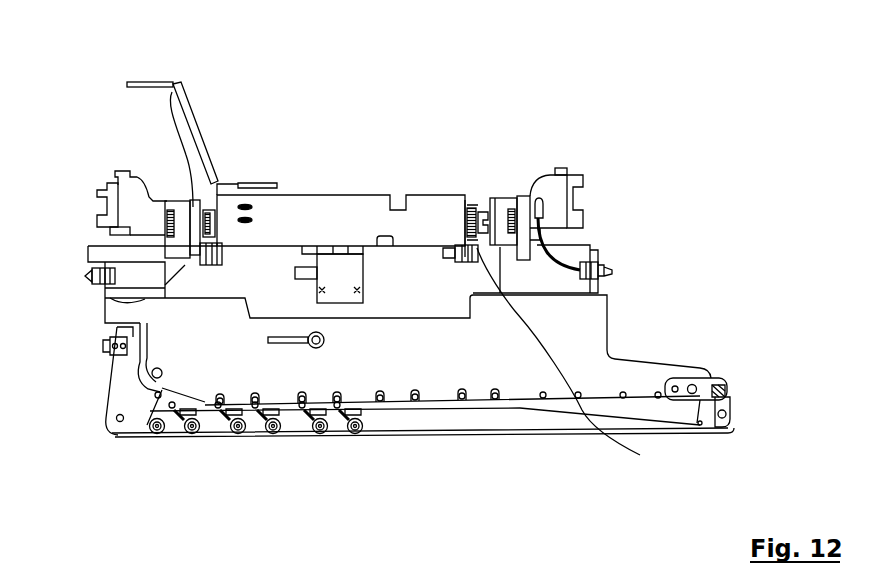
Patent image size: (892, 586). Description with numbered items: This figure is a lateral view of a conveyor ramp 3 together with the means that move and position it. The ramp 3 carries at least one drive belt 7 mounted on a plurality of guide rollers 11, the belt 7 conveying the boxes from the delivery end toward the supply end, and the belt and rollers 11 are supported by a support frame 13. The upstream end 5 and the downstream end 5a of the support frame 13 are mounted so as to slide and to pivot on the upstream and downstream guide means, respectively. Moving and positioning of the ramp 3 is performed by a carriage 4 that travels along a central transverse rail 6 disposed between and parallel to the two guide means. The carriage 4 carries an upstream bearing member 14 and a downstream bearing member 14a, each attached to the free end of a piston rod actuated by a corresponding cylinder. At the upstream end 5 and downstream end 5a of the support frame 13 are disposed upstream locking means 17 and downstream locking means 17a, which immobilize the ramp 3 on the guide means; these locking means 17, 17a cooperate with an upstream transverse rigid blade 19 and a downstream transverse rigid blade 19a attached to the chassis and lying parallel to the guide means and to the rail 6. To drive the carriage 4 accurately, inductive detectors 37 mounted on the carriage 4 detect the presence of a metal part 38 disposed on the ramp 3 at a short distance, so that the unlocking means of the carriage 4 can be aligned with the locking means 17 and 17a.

The ramp 3 is at (640, 358).
The carriage 4 is at (343, 195).
The upstream end 5 is at (587, 182).
The downstream end 5a is at (97, 188).
The central transverse rail 6 is at (380, 282).
The drive belt 7 is at (463, 433).
The guide rollers 11 is at (245, 433).
The support frame 13 is at (597, 248).
The upstream bearing member 14 is at (473, 205).
The downstream bearing member 14a is at (226, 193).
The upstream locking means 17 is at (481, 207).
The downstream locking means 17a is at (193, 62).
The upstream transverse rigid blade 19 is at (515, 200).
The downstream transverse rigid blade 19a is at (168, 205).
The inductive detector 37 is at (103, 313).
The metal part 38 is at (160, 272).